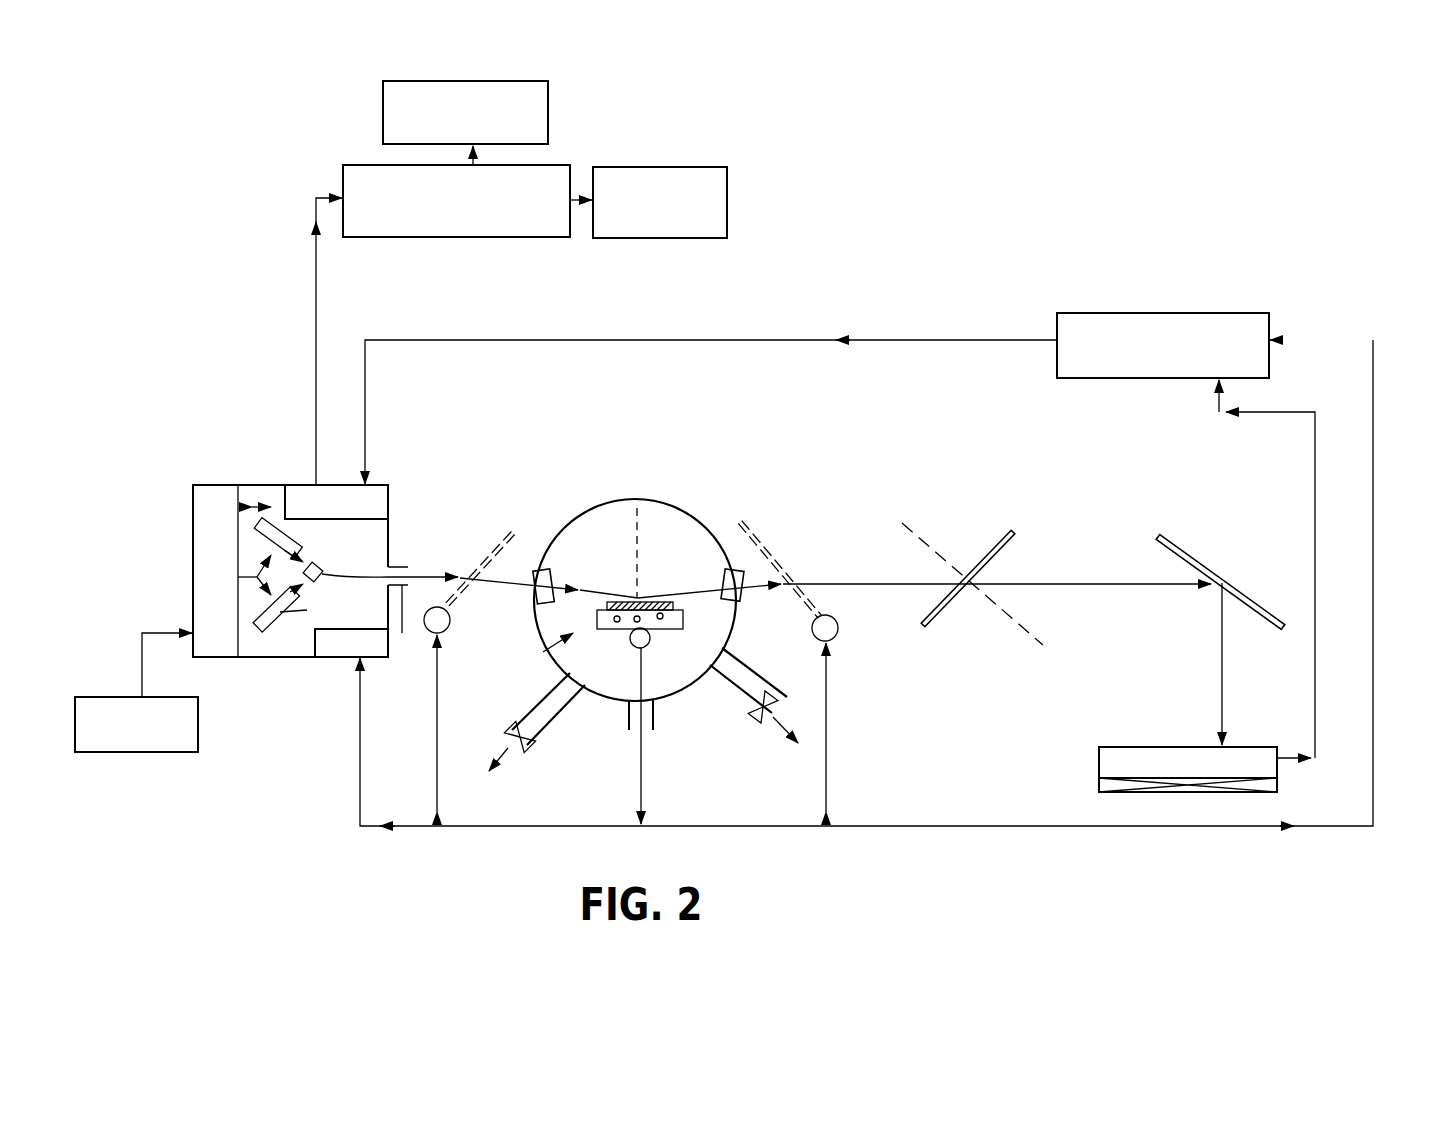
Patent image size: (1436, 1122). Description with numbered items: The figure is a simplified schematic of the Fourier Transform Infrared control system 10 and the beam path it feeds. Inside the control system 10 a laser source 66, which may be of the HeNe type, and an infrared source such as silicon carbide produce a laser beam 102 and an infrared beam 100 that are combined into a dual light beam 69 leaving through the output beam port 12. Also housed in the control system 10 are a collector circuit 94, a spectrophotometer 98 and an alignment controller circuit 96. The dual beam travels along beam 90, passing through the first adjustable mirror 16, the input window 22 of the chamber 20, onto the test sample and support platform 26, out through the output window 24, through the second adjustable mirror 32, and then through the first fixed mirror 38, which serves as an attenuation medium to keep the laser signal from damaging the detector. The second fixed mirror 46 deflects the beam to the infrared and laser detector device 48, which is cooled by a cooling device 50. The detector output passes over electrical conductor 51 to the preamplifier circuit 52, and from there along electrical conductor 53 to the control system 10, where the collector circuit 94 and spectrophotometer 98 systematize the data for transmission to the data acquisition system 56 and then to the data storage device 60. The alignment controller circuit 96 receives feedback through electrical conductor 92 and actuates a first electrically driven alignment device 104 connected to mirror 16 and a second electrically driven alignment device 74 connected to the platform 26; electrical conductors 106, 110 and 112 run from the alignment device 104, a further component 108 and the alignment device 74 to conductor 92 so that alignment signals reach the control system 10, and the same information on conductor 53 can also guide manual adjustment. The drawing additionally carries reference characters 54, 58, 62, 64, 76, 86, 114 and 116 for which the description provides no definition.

The FTIR control system 10 is at (187, 577).
The infrared and laser output beam port 12 is at (405, 624).
The first adjustable light transmission mirror 16 is at (510, 535).
The chamber 20 is at (678, 498).
The input window 22 is at (537, 603).
The output window 24 is at (722, 575).
The test sample support platform and sample material 26 is at (541, 650).
The second adjustable mirror 32 is at (767, 548).
The first fixed mirror 38 is at (1003, 548).
The second fixed mirror 46 is at (1185, 552).
The infrared and laser detector device 48 is at (1099, 768).
The cooling device 50 is at (1277, 788).
The electrical conductor 51 is at (1318, 585).
The preamplifier circuit 52 is at (1227, 313).
The electrical conductor 53 is at (700, 337).
The data line to data acquisition system 54 is at (314, 320).
The data acquisition system 56 is at (493, 238).
The data storage link 58 is at (577, 200).
The data storage device 60 is at (727, 200).
The real-time monitor 62 is at (548, 113).
The monitor link 64 is at (475, 162).
The laser source 66 is at (278, 622).
The dual light beam 69 is at (453, 572).
The second electrically driven alignment device 74 is at (646, 647).
The sample port 76 is at (637, 670).
The power source 86 is at (110, 697).
The beam 90 is at (893, 580).
The electrical conductor 92 is at (1383, 640).
The collector circuit 94 is at (330, 483).
The alignment controller circuit 96 is at (340, 657).
The spectrophotometer 98 is at (270, 537).
The infrared beam 100 is at (320, 566).
The laser beam 102 is at (322, 584).
The first electrically driven alignment device 104 is at (450, 626).
The electrical conductor 106 is at (436, 737).
The component 108 is at (840, 632).
The electrical conductor 110 is at (853, 727).
The electrical conductor 112 is at (640, 760).
The gas outlet valve 114 is at (737, 698).
The gas inlet valve 116 is at (547, 727).